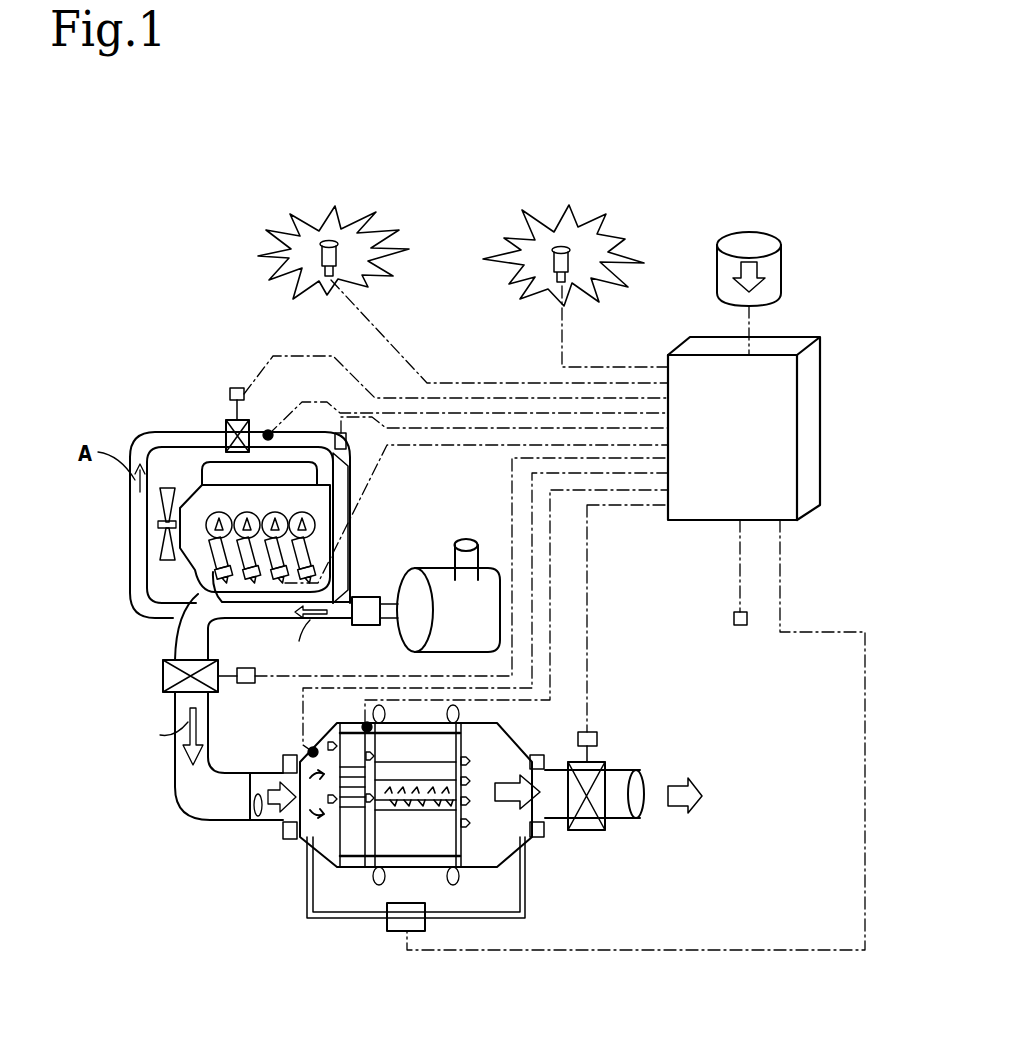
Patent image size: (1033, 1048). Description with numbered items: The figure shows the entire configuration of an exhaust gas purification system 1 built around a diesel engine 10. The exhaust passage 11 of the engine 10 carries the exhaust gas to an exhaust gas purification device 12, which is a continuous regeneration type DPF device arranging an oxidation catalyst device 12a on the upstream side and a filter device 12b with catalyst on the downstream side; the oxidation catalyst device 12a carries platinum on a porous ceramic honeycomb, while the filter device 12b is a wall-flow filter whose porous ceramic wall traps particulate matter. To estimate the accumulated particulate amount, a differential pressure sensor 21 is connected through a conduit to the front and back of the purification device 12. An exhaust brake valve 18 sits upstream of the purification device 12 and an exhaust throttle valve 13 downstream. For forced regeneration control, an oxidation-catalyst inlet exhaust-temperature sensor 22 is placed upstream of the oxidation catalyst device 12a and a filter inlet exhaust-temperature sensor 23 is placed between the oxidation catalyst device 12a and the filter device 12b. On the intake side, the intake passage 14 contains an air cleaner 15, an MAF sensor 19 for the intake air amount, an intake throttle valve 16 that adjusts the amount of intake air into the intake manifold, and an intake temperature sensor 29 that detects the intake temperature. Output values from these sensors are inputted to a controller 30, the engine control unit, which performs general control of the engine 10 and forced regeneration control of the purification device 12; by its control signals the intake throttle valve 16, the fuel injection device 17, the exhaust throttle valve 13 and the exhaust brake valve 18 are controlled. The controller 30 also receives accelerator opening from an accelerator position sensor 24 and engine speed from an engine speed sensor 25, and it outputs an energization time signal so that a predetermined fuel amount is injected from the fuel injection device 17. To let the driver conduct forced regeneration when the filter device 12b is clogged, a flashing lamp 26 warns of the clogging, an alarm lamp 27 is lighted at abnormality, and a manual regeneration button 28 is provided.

The exhaust gas purification system 1 is at (683, 252).
The diesel engine 10 is at (197, 493).
The exhaust passage 11 is at (206, 808).
The exhaust gas purification device 12 is at (510, 850).
The oxidation catalyst device 12a is at (352, 838).
The filter device with catalyst 12b is at (427, 837).
The exhaust throttle valve 13 is at (600, 764).
The intake passage 14 is at (130, 510).
The air cleaner 15 is at (436, 582).
The intake throttle valve 16 is at (232, 420).
The fuel injection device 17 is at (207, 546).
The exhaust brake valve 18 is at (163, 680).
The MAF sensor 19 is at (370, 597).
The differential pressure sensor 21 is at (398, 920).
The oxidation-catalyst inlet exhaust-temperature sensor 22 is at (311, 750).
The filter inlet exhaust-temperature sensor 23 is at (366, 722).
The accelerator position sensor 24 is at (740, 625).
The engine speed sensor 25 is at (341, 433).
The flashing lamp 26 is at (329, 245).
The alarm lamp 27 is at (562, 250).
The manual regeneration button 28 is at (766, 240).
The intake temperature sensor 29 is at (270, 432).
The controller 30 is at (810, 442).